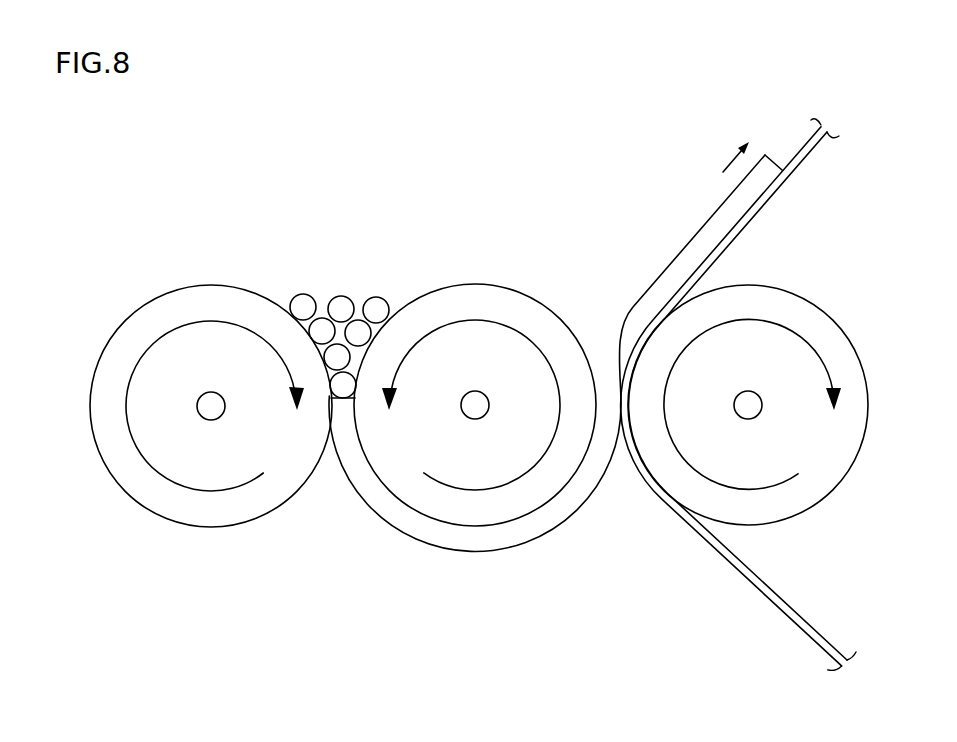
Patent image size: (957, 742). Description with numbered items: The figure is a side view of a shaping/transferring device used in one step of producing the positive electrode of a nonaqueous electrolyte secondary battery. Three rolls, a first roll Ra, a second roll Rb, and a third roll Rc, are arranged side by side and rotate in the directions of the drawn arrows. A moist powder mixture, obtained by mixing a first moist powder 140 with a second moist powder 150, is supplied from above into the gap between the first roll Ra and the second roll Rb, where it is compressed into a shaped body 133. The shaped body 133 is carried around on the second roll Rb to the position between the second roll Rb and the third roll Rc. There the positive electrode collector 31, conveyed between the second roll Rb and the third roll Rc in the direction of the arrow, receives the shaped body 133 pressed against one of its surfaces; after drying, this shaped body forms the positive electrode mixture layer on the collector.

The first roll Ra is at (212, 299).
The second roll Rb is at (480, 299).
The third roll Rc is at (783, 305).
The shaped body 133 is at (699, 239).
The positive electrode collector 31 is at (745, 578).
The first moist powder 140 is at (301, 303).
The second moist powder 150 is at (341, 307).